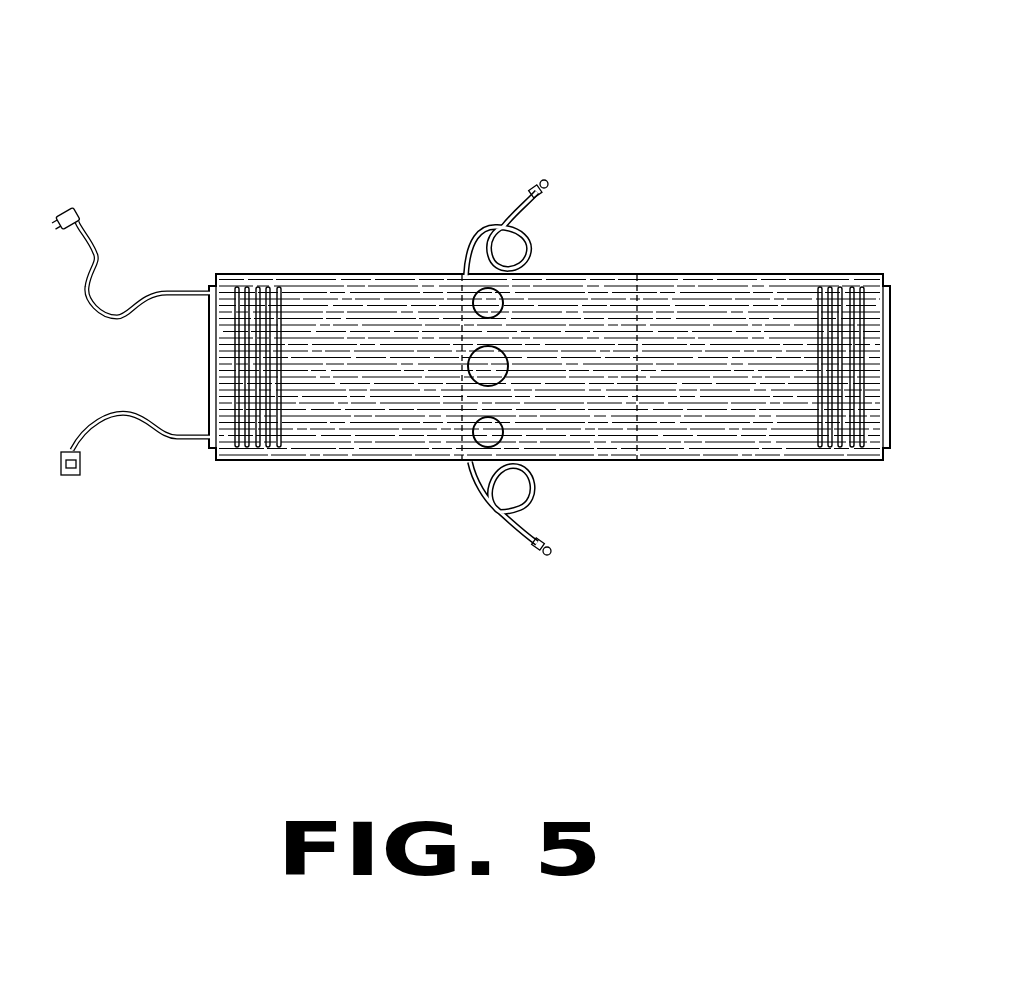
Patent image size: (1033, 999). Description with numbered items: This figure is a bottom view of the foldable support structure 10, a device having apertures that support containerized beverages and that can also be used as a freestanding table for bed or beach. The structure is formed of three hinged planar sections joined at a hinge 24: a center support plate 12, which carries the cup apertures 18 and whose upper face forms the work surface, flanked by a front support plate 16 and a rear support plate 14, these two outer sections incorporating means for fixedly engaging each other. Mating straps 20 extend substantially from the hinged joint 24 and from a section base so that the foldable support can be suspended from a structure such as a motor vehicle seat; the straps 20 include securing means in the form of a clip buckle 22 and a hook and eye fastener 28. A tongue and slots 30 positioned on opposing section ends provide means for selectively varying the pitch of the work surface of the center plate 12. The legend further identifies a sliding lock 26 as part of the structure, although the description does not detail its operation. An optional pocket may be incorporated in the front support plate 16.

The foldable support structure 10 is at (694, 112).
The center support plate 12 is at (613, 287).
The rear support plate 14 is at (267, 458).
The front support plate 16 is at (812, 287).
The cup apertures 18 is at (496, 316).
The strap 20 is at (140, 450).
The buckle 22 is at (80, 216).
The hinge 24 is at (460, 338).
The sliding lock 26 is at (460, 460).
The hook and eye fastener 28 is at (548, 183).
The slot 30 is at (235, 290).